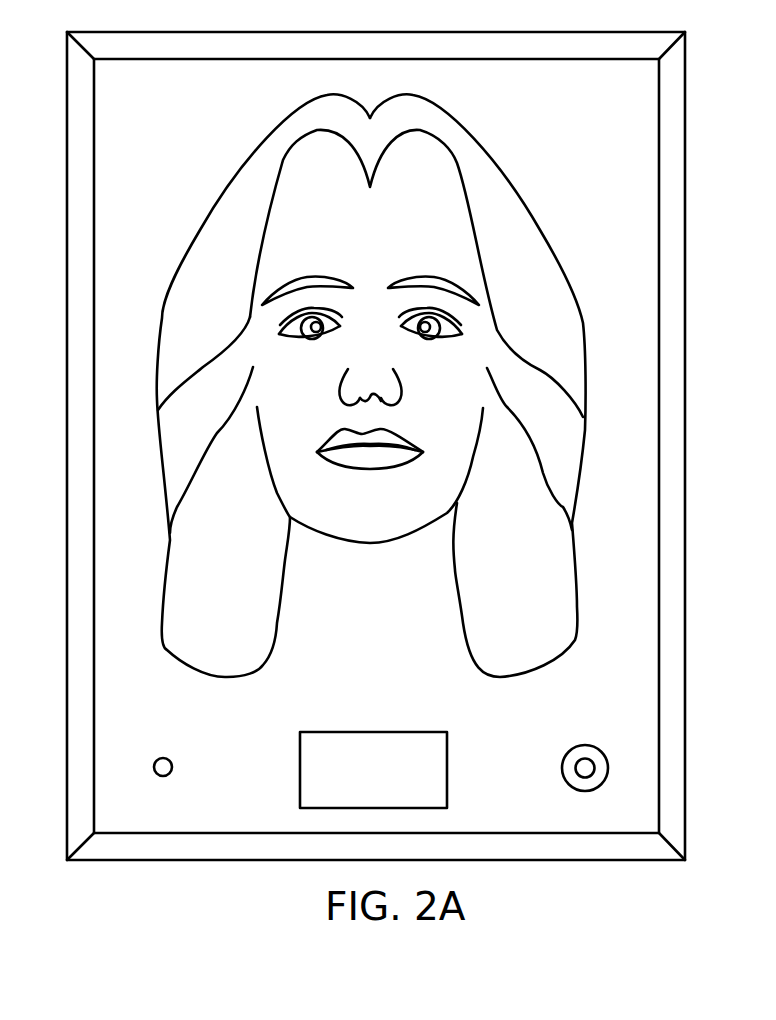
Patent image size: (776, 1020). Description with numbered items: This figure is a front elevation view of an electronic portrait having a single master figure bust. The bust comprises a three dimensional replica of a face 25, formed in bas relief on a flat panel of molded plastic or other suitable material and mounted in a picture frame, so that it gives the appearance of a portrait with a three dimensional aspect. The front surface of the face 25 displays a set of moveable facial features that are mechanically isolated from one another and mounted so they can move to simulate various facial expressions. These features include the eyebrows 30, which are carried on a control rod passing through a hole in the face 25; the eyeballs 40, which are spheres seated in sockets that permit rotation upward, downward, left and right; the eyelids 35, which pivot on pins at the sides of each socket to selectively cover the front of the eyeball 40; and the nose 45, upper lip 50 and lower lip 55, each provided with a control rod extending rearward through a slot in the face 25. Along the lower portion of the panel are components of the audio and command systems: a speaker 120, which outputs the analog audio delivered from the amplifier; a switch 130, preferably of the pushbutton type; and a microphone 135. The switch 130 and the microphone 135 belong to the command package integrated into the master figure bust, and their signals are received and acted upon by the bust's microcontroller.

The face 25 is at (563, 224).
The eyebrows 30 is at (310, 282).
The eyelids 35 is at (280, 325).
The eyeballs 40 is at (295, 336).
The nose 45 is at (400, 388).
The upper lip 50 is at (400, 438).
The lower lip 55 is at (395, 458).
The speaker 120 is at (440, 770).
The switch 130 is at (172, 770).
The microphone 135 is at (605, 773).